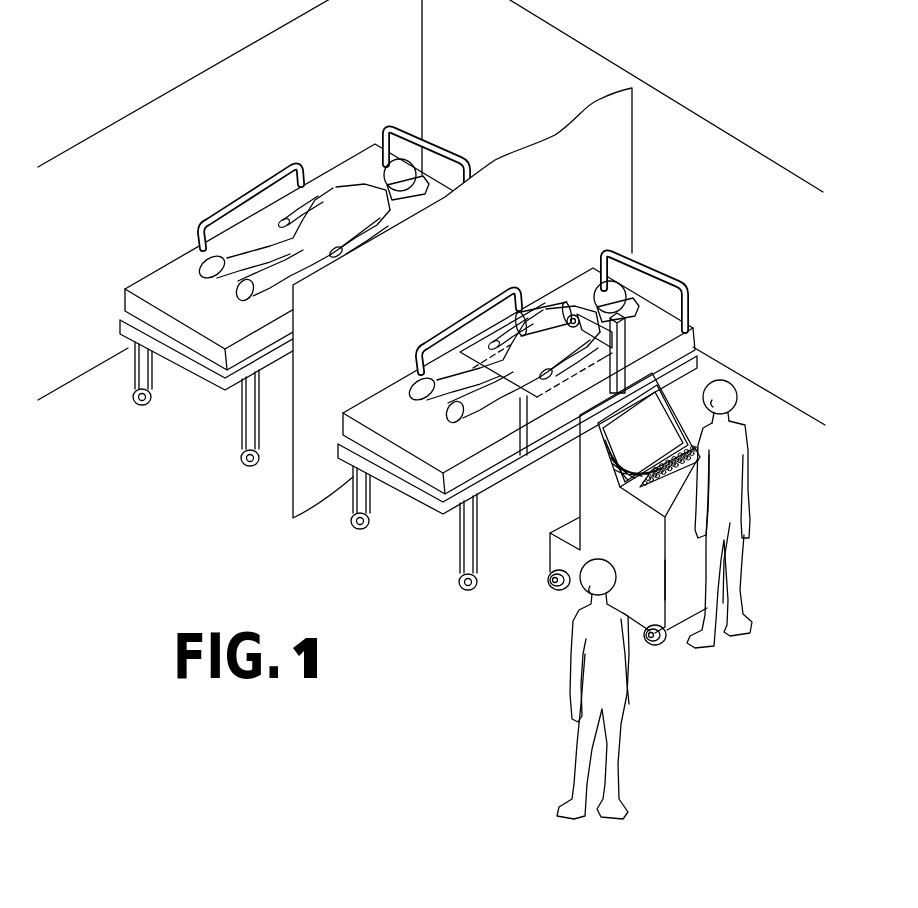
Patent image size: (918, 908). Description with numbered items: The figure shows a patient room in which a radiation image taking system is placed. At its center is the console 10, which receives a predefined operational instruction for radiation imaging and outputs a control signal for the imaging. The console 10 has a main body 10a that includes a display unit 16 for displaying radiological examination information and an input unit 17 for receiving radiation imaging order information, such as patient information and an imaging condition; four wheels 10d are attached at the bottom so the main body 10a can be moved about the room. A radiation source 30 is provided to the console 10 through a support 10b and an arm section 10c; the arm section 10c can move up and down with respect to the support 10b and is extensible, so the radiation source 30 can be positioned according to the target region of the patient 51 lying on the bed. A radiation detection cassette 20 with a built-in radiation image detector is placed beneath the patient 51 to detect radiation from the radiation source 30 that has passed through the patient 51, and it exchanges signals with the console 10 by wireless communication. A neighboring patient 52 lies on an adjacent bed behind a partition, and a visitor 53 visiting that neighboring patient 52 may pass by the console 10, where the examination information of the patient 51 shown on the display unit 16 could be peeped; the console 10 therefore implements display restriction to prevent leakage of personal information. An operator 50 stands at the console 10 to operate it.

The console 10 is at (578, 503).
The main body 10a is at (680, 600).
The support 10b is at (627, 337).
The arm section 10c is at (592, 323).
The wheels 10d is at (557, 596).
The display unit 16 is at (623, 432).
The input unit 17 is at (653, 492).
The radiation detection cassette 20 is at (507, 297).
The radiation source 30 is at (537, 297).
The operator (radiographer) 50 is at (733, 430).
The patient 51 is at (613, 285).
The neighboring patient 52 is at (404, 165).
The visitor 53 is at (613, 730).